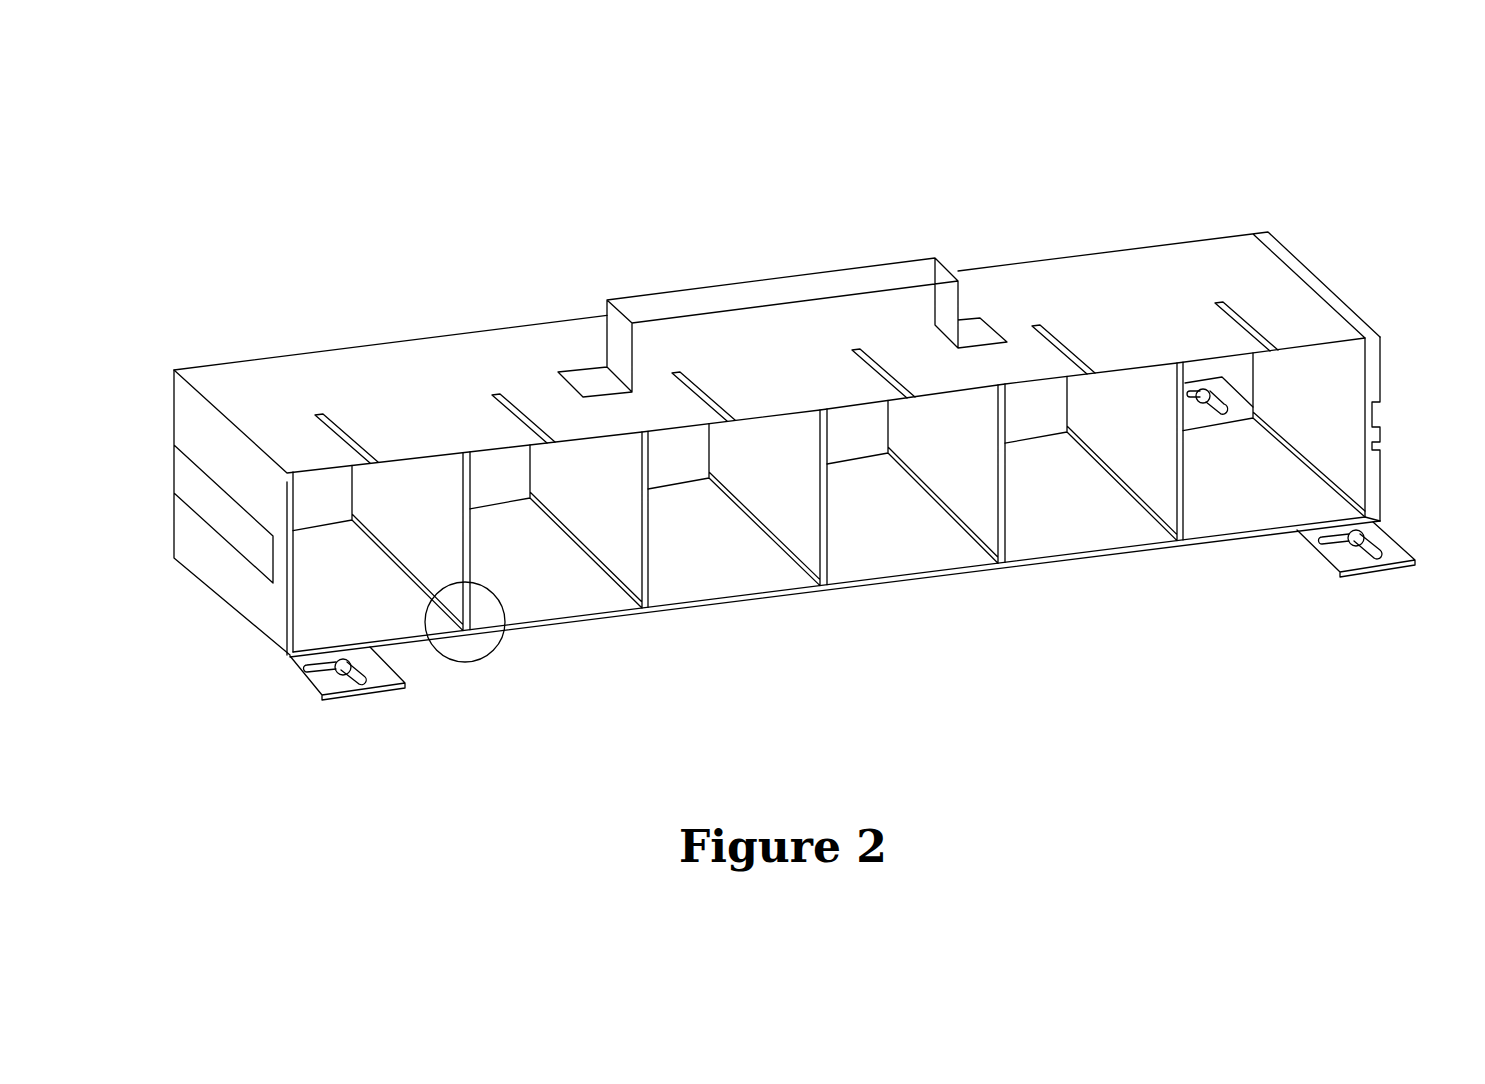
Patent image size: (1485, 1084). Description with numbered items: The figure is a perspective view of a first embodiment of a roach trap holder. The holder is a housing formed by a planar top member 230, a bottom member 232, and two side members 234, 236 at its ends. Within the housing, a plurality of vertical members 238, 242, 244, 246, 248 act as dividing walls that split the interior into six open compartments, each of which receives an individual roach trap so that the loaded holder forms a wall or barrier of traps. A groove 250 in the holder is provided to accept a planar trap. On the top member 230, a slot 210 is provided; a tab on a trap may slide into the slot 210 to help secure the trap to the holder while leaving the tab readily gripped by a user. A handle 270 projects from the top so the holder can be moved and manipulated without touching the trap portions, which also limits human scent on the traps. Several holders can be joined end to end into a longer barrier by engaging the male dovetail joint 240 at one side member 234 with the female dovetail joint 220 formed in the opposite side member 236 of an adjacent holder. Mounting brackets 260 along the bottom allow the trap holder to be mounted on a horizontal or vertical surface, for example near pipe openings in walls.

The slot 210 is at (796, 508).
The female dovetail joint 220 is at (1388, 414).
The top member 230 is at (273, 339).
The bottom member 232 is at (910, 583).
The side member 234 is at (185, 415).
The side member 236 is at (1407, 389).
The vertical member 238 is at (468, 537).
The male dovetail joint 240 is at (253, 590).
The vertical member 242 is at (648, 525).
The vertical member 244 is at (827, 510).
The vertical member 246 is at (1005, 492).
The vertical member 248 is at (1185, 467).
The groove 250 is at (487, 658).
The mounting brackets 260 is at (360, 709).
The handle 270 is at (878, 265).